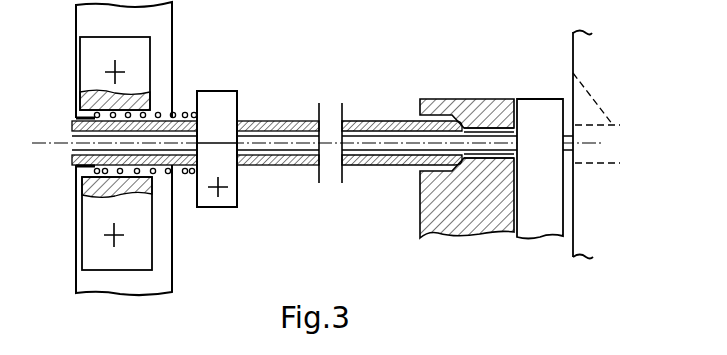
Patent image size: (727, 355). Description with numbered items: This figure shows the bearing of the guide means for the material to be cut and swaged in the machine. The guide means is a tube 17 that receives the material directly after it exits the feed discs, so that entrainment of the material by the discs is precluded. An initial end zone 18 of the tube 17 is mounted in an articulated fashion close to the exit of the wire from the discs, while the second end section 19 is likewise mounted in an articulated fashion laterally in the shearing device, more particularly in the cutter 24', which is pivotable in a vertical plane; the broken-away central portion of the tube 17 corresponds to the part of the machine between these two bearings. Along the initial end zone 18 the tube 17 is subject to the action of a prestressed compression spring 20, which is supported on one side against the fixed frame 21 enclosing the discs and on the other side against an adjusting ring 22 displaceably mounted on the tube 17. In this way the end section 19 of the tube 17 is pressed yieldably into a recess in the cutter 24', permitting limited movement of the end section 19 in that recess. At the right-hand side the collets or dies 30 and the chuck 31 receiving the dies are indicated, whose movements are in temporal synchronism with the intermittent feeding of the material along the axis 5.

The shaft axis 5 is at (54, 143).
The tube 17 is at (258, 122).
The initial end zone 18 is at (161, 97).
The second end section 19 is at (404, 112).
The prestressed compression spring 20 is at (185, 174).
The fixed frame 21 is at (80, 282).
The adjusting ring 22 is at (229, 208).
The cutter 24' is at (467, 140).
The collets or dies 30 is at (573, 73).
The chuck 31 is at (582, 52).